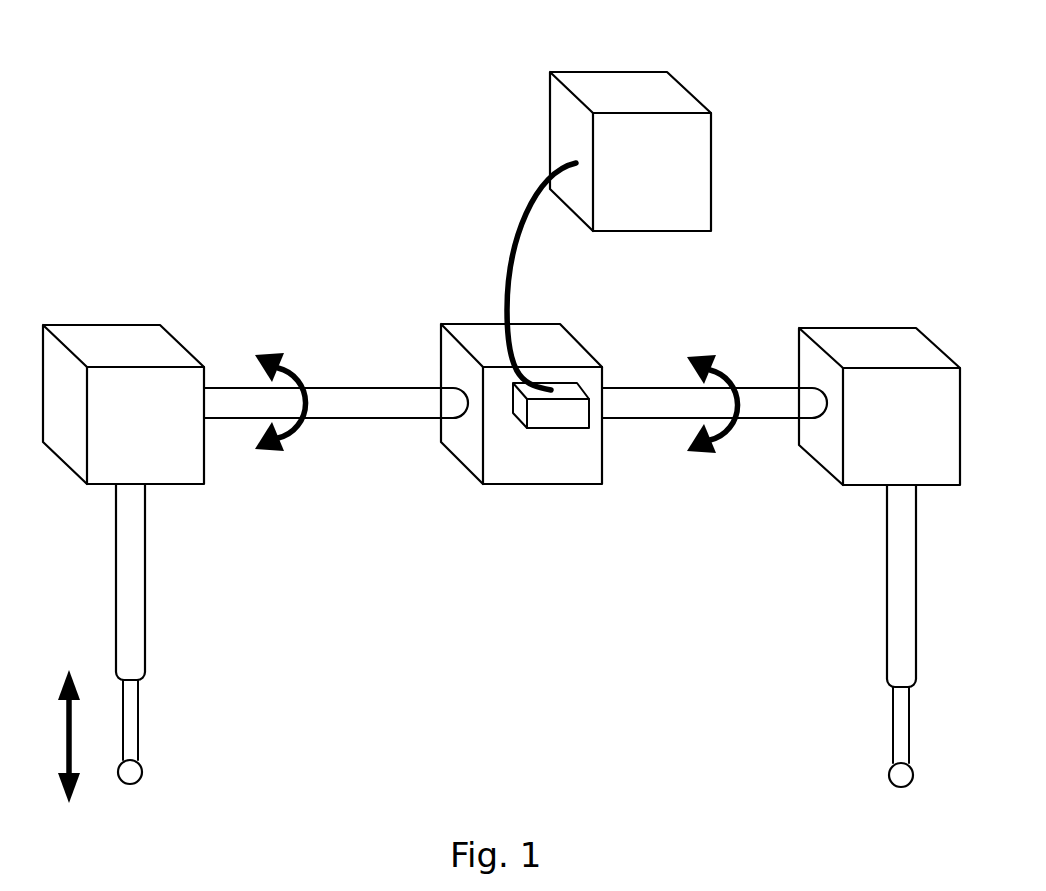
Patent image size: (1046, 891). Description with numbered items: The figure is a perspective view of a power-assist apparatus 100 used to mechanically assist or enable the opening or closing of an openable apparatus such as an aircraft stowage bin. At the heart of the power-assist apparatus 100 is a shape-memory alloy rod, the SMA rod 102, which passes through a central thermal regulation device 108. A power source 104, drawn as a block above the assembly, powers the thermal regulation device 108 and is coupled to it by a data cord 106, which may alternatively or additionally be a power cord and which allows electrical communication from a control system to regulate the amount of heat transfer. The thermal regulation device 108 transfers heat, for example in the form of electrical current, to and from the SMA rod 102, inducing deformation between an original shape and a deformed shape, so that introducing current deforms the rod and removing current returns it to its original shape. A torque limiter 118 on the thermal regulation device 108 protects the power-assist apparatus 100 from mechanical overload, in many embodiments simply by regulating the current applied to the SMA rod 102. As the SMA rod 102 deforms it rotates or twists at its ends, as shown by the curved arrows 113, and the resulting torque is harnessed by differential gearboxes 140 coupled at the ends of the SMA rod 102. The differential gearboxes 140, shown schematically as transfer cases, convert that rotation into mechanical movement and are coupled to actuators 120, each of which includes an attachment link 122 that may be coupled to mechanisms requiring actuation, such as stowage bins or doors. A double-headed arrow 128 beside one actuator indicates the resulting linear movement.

The power-assist apparatus 100 is at (272, 142).
The shape-memory alloy (SMA) rod 102 is at (358, 397).
The power source 104 is at (564, 120).
The data cord 106 is at (520, 210).
The thermal regulation device 108 is at (457, 323).
The arrows 113 is at (295, 433).
The torque limiter 118 is at (558, 430).
The actuators 120 is at (137, 593).
The attachment link 122 is at (144, 768).
The vertical motion arrow 128 is at (73, 760).
The differential gearboxes 140 is at (140, 350).